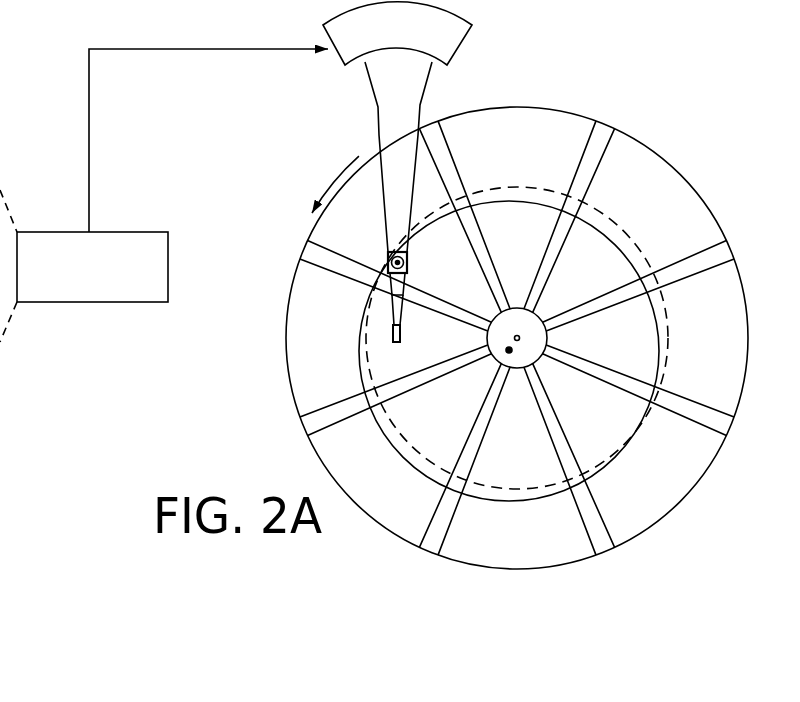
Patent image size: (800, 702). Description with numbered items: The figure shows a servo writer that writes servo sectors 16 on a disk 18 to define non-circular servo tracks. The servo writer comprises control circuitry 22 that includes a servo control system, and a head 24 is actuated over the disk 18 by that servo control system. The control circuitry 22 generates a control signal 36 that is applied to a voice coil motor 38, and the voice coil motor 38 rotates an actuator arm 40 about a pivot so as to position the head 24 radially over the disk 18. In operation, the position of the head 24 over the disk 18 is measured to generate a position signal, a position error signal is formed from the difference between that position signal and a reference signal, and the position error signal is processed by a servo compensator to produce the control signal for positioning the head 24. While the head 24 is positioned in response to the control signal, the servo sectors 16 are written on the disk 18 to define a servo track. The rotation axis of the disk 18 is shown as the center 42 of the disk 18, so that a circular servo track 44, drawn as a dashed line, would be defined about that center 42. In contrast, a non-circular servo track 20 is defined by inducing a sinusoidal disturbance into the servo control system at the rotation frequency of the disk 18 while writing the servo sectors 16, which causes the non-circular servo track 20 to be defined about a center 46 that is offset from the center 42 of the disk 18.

The servo sectors 16 is at (438, 128).
The disk 18 is at (678, 159).
The non-circular servo track 20 is at (630, 260).
The control circuitry 22 is at (133, 232).
The head 24 is at (405, 333).
The control signal 36 is at (88, 125).
The voice coil motor 38 is at (340, 64).
The actuator arm 40 is at (377, 123).
The center of the disk 42 is at (522, 334).
The circular servo track 44 is at (616, 222).
The center of the non-circular servo track 46 is at (505, 352).